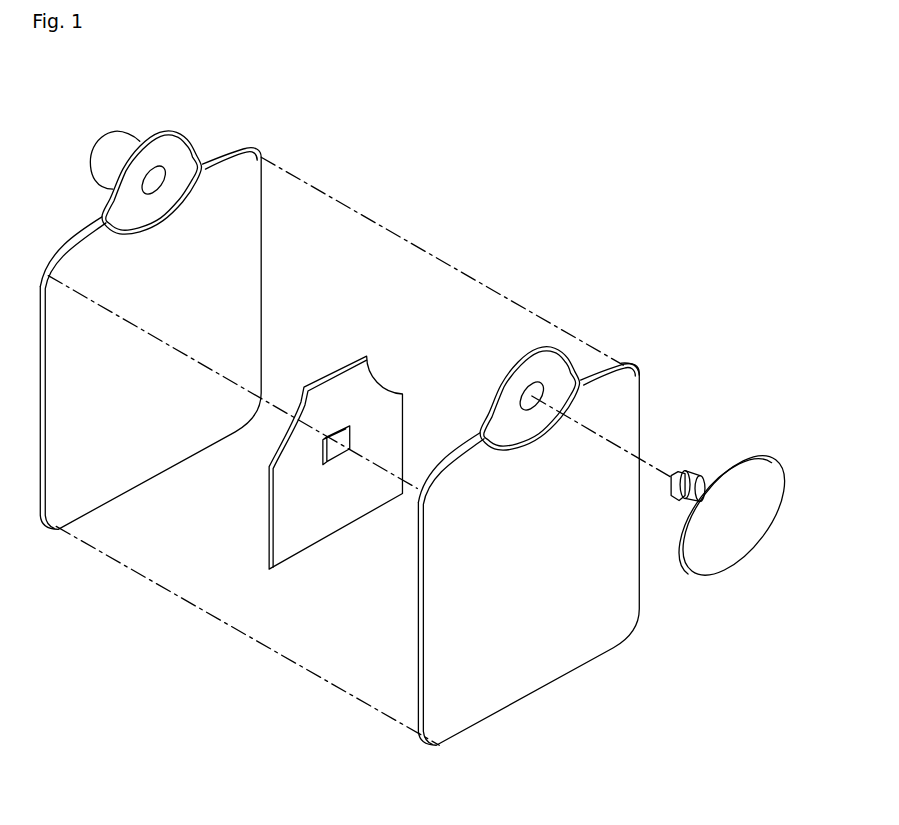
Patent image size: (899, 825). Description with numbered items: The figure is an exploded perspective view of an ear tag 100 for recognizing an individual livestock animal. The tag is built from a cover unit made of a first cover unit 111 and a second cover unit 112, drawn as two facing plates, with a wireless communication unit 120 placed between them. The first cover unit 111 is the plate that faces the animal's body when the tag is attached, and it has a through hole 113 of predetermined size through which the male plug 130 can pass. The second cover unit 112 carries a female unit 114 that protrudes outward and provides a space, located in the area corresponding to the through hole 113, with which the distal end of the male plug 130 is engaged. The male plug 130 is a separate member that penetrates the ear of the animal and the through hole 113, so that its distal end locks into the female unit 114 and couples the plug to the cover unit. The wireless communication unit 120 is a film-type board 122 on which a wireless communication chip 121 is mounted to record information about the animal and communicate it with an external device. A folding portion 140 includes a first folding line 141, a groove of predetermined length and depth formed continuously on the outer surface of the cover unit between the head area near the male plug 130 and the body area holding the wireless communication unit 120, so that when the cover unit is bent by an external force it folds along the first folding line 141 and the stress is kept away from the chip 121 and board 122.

The ear tag for recognizing livestock individual 100 is at (470, 150).
The first cover unit 111 is at (535, 678).
The second cover unit 112 is at (97, 487).
The through hole 113 is at (572, 360).
The female unit 114 is at (114, 141).
The wireless communication unit 120 is at (337, 417).
The wireless communication chip 121 is at (357, 442).
The board 122 is at (328, 404).
The male plug 130 is at (738, 563).
The folding portion 140 is at (603, 360).
The first folding line 141 is at (633, 382).